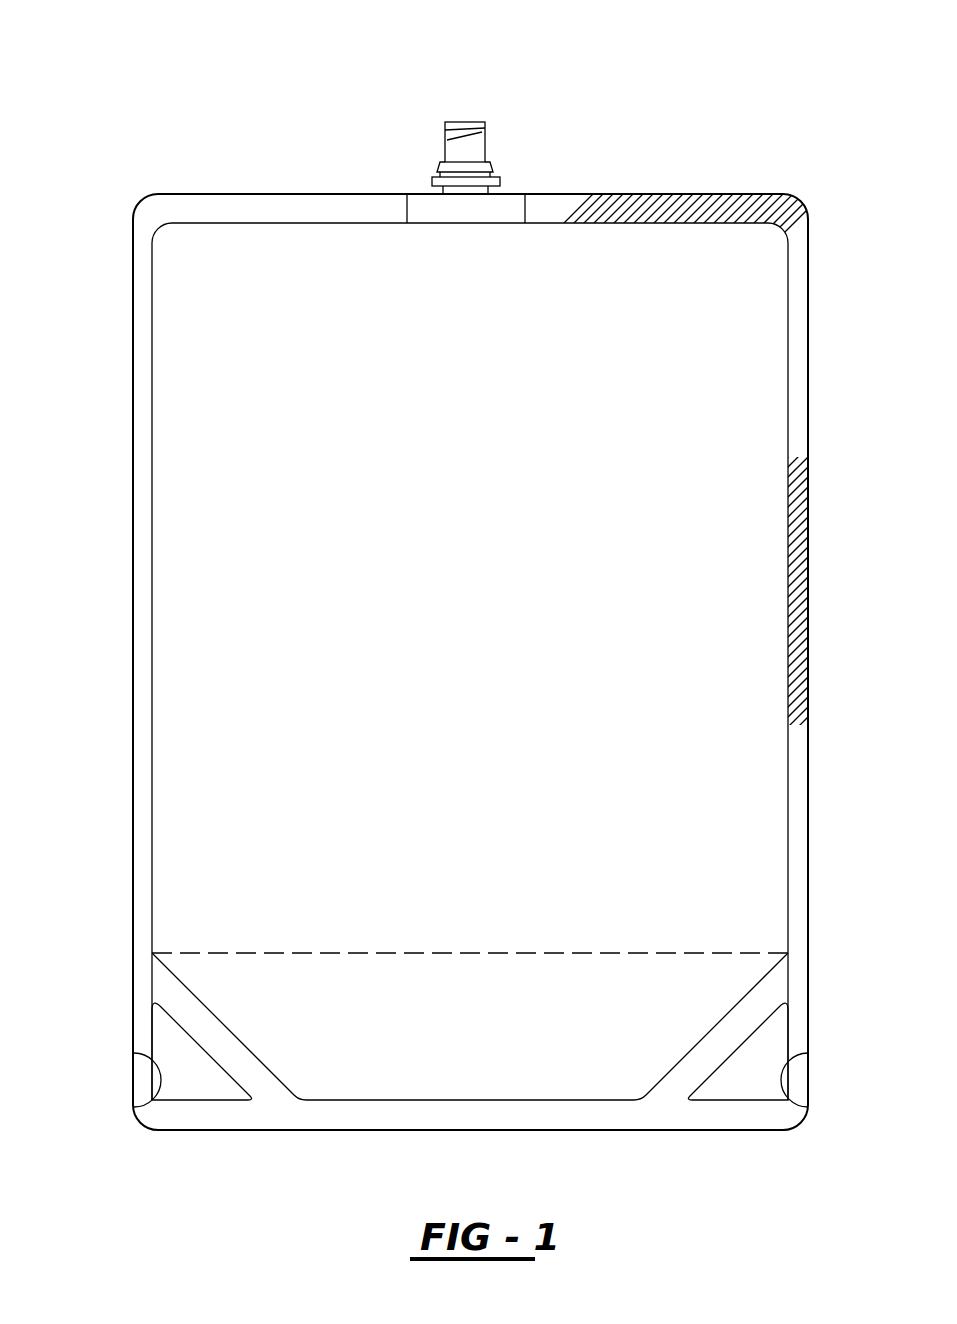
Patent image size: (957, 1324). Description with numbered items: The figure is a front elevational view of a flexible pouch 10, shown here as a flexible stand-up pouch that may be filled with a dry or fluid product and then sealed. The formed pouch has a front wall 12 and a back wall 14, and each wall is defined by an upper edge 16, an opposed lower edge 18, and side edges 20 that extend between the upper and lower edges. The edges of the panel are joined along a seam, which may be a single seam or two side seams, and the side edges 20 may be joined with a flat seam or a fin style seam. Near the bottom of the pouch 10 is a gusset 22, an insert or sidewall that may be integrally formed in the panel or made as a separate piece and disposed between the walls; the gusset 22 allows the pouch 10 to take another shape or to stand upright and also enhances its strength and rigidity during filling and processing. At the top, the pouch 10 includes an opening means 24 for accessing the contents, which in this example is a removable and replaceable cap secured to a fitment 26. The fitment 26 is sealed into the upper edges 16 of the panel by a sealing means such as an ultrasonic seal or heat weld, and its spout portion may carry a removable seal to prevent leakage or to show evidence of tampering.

The flexible pouch 10 is at (311, 77).
The front wall 12 is at (738, 425).
The back wall 14 is at (133, 694).
The upper edge 16 is at (268, 208).
The lower edge 18 is at (290, 1107).
The side edges 20 is at (142, 380).
The gusset 22 is at (764, 1040).
The opening means 24 is at (502, 100).
The fitment 26 is at (486, 147).